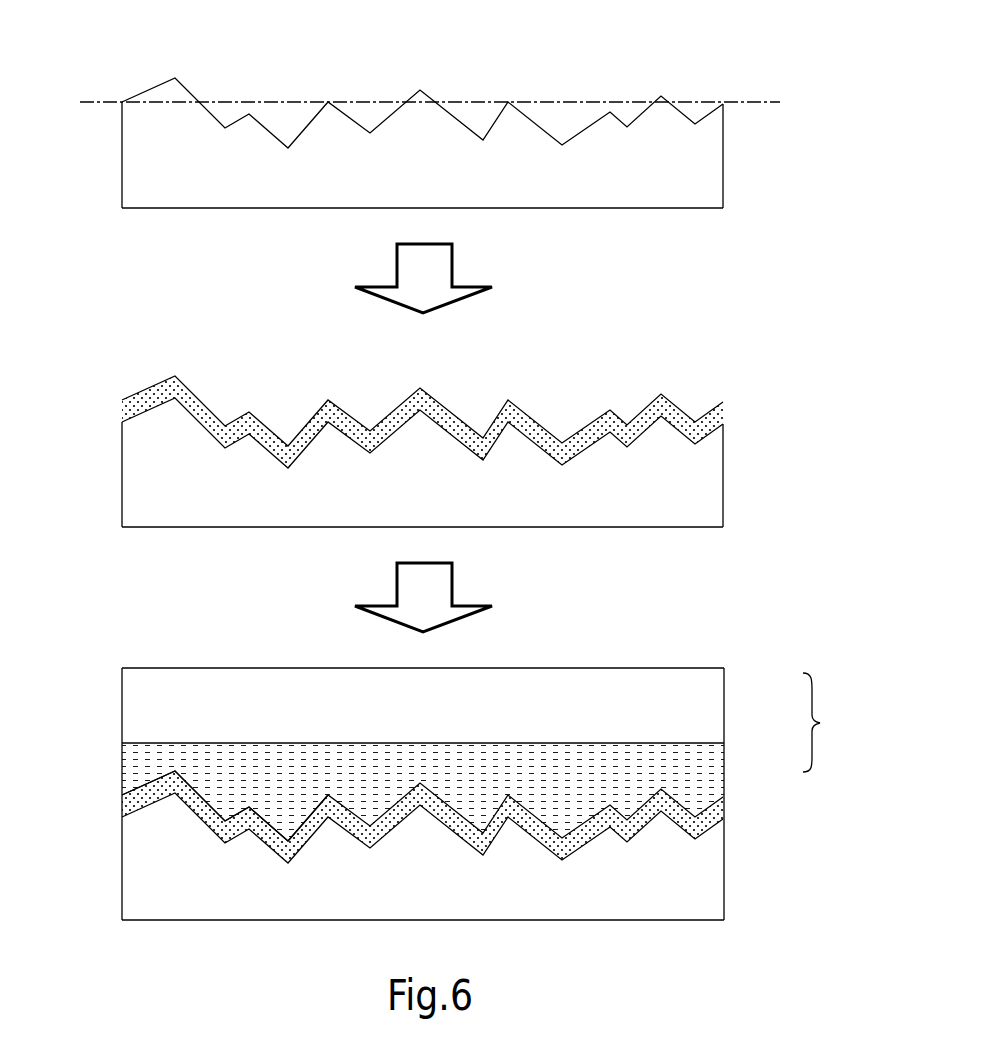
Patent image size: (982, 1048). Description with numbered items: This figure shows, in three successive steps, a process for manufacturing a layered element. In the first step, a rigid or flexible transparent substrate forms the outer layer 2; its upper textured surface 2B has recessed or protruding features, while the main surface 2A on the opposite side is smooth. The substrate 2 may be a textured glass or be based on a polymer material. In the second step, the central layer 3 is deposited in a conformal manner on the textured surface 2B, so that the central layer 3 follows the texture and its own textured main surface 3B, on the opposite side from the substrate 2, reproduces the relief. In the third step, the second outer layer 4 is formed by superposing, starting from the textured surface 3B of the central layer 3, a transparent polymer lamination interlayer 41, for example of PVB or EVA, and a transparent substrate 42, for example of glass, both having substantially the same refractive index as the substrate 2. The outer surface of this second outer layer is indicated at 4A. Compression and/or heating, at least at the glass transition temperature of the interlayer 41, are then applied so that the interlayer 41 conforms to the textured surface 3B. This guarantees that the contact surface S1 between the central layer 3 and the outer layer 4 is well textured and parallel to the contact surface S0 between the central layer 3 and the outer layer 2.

The outer layer 2 is at (713, 153).
The main surface 2A is at (704, 212).
The textured surface 2B is at (707, 107).
The central layer 3 is at (725, 415).
The textured main surface 3B is at (198, 380).
The second outer layer 4 is at (485, 742).
The top surface of second layer 4A is at (652, 665).
The lamination interlayer 41 is at (715, 767).
The transparent substrate 42 is at (715, 703).
The contact surface S0 is at (115, 817).
The contact surface S1 is at (115, 795).